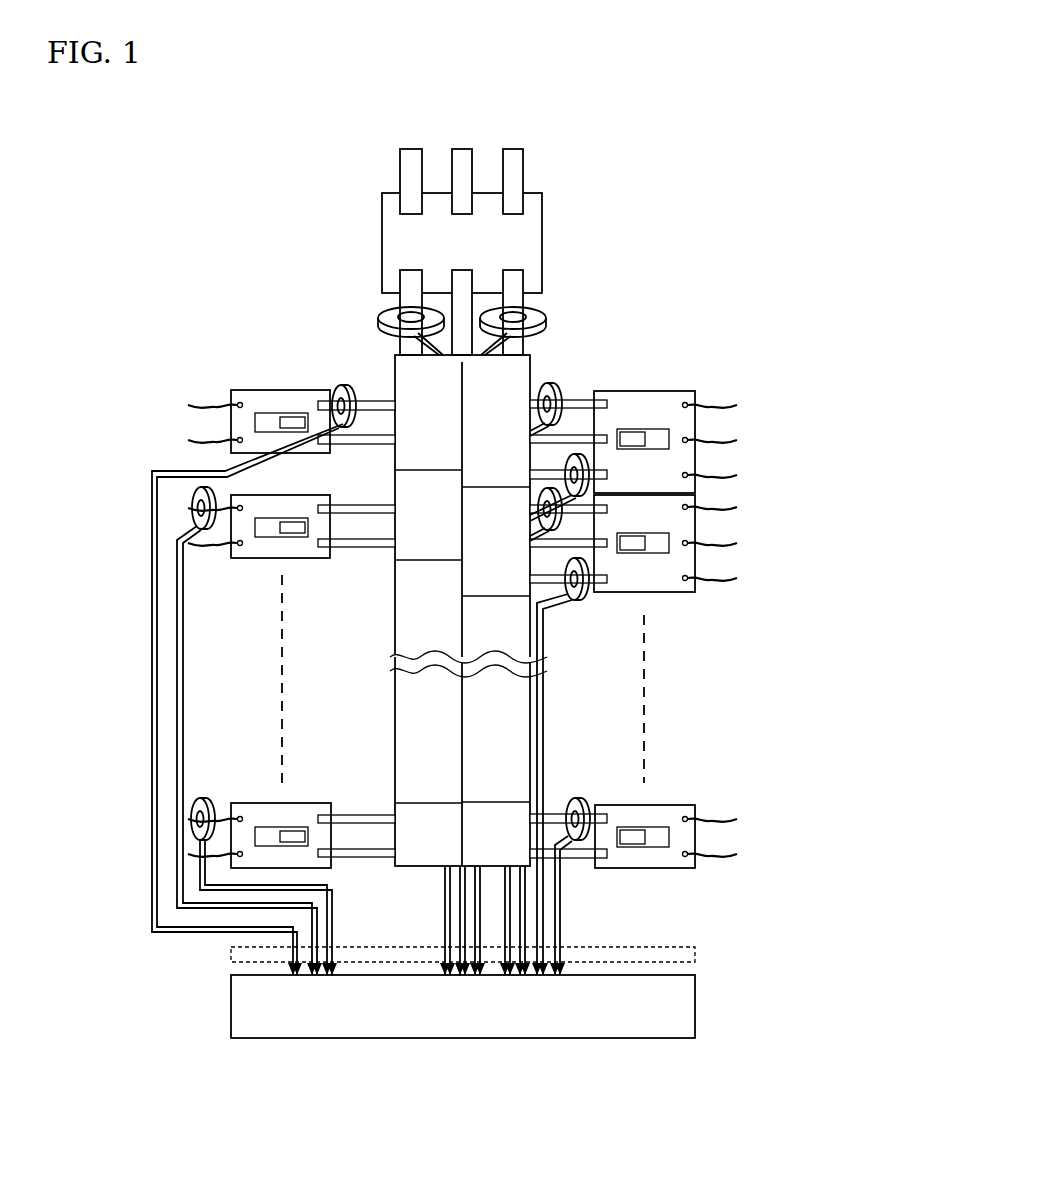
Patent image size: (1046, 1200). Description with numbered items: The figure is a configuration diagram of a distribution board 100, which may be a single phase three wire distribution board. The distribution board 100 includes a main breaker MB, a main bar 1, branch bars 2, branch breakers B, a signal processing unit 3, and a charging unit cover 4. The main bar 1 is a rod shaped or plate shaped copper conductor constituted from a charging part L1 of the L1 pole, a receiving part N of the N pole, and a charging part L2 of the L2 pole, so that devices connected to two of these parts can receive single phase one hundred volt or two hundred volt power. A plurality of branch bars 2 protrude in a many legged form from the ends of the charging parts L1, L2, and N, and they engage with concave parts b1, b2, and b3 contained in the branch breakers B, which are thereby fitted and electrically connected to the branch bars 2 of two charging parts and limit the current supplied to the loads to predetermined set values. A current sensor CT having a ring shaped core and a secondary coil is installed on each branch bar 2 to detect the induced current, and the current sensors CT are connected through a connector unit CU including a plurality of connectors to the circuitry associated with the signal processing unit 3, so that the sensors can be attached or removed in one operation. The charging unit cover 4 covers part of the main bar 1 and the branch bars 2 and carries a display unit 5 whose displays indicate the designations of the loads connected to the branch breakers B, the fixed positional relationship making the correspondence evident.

The distribution board 100 is at (696, 196).
The main bar 1 is at (371, 263).
The charging part of L1 pole L1 is at (408, 283).
The receiving part of N pole N is at (463, 278).
The charging part of L2 pole L2 is at (515, 278).
The main breaker MB is at (535, 228).
The branch bar 2 is at (539, 625).
The concave part b1 is at (605, 405).
The concave part b2 is at (602, 440).
The concave part b3 is at (600, 475).
The signal processing unit 3 is at (695, 1009).
The charging unit cover 4 is at (395, 640).
The display unit 5 is at (415, 362).
The branch breaker B is at (230, 395).
The current sensor CT is at (393, 313).
The connector unit CU is at (695, 955).